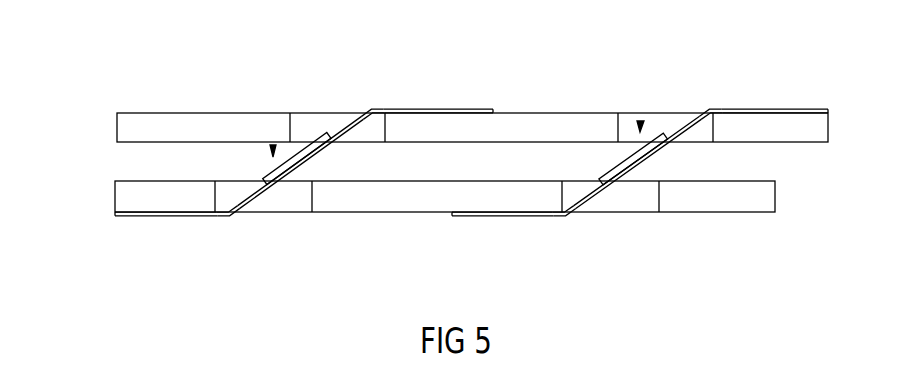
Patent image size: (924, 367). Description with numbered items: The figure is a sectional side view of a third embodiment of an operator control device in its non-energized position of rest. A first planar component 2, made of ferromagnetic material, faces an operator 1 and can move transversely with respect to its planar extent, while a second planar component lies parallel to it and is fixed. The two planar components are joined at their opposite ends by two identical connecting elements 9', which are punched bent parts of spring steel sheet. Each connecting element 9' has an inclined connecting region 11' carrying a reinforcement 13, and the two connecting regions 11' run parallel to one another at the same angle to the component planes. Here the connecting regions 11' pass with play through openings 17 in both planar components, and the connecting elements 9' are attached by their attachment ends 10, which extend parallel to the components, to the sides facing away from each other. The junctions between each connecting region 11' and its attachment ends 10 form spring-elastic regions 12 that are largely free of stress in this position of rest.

The operator 1 is at (552, 112).
The first planar component 2 is at (397, 213).
The connecting element 9' is at (474, 89).
The attachment end 10 is at (437, 108).
The connecting region 11' is at (470, 194).
The spring-elastic region 12 is at (371, 110).
The reinforcement 13 is at (290, 157).
The opening 17 is at (328, 120).